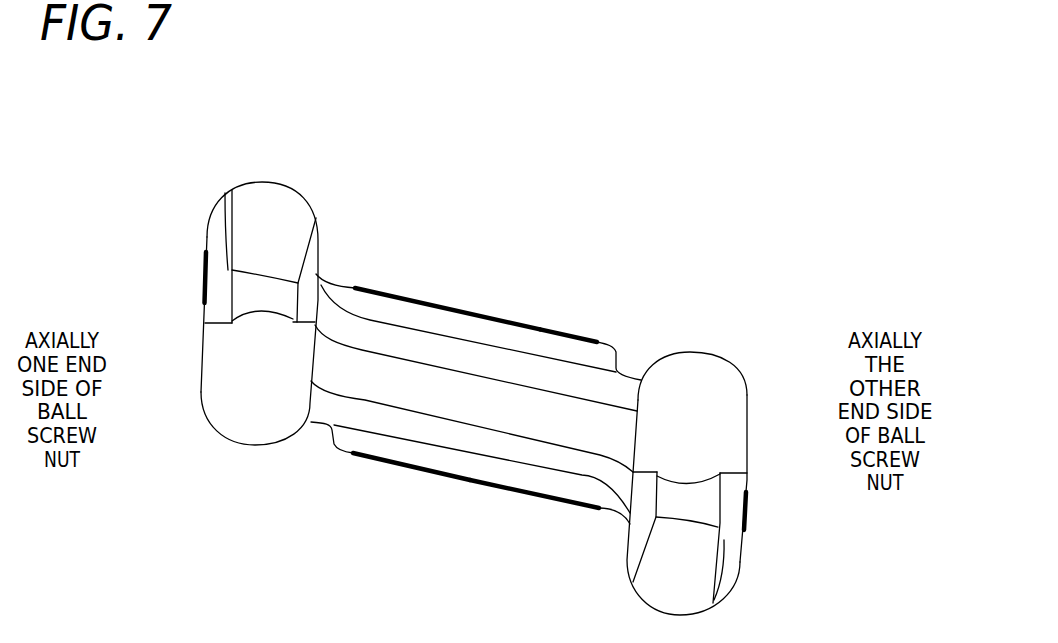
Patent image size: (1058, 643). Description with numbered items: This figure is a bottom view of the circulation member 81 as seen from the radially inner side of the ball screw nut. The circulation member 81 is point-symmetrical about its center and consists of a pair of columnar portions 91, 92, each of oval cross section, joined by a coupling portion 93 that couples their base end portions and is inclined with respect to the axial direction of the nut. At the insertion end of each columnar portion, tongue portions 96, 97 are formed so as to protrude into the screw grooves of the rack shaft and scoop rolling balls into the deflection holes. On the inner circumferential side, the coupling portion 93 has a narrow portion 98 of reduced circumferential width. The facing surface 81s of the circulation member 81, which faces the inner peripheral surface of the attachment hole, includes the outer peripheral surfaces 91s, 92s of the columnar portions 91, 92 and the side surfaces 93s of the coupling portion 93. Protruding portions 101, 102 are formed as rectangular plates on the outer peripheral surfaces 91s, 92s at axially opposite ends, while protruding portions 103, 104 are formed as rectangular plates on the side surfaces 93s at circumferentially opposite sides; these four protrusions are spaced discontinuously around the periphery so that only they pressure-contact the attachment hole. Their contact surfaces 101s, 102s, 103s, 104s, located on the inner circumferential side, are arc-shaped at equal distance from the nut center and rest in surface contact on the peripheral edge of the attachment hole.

The circulation member 81 is at (148, 160).
The facing surface 81s is at (468, 394).
The columnar portion 91 is at (219, 200).
The outer peripheral surface 91s is at (205, 338).
The columnar portion 92 is at (735, 580).
The outer peripheral surface 92s is at (747, 450).
The coupling portion 93 is at (374, 306).
The side surfaces 93s is at (343, 286).
The tongue portion 96 is at (261, 299).
The tongue portion 97 is at (690, 490).
The narrow portion 98 is at (417, 338).
The protruding portion 101 is at (205, 262).
The contact surface 101s is at (205, 292).
The protruding portion 102 is at (750, 510).
The contact surface 102s is at (750, 525).
The protruding portion 103 is at (396, 466).
The contact surface 103s is at (473, 488).
The protruding portion 104 is at (502, 318).
The contact surface 104s is at (577, 336).